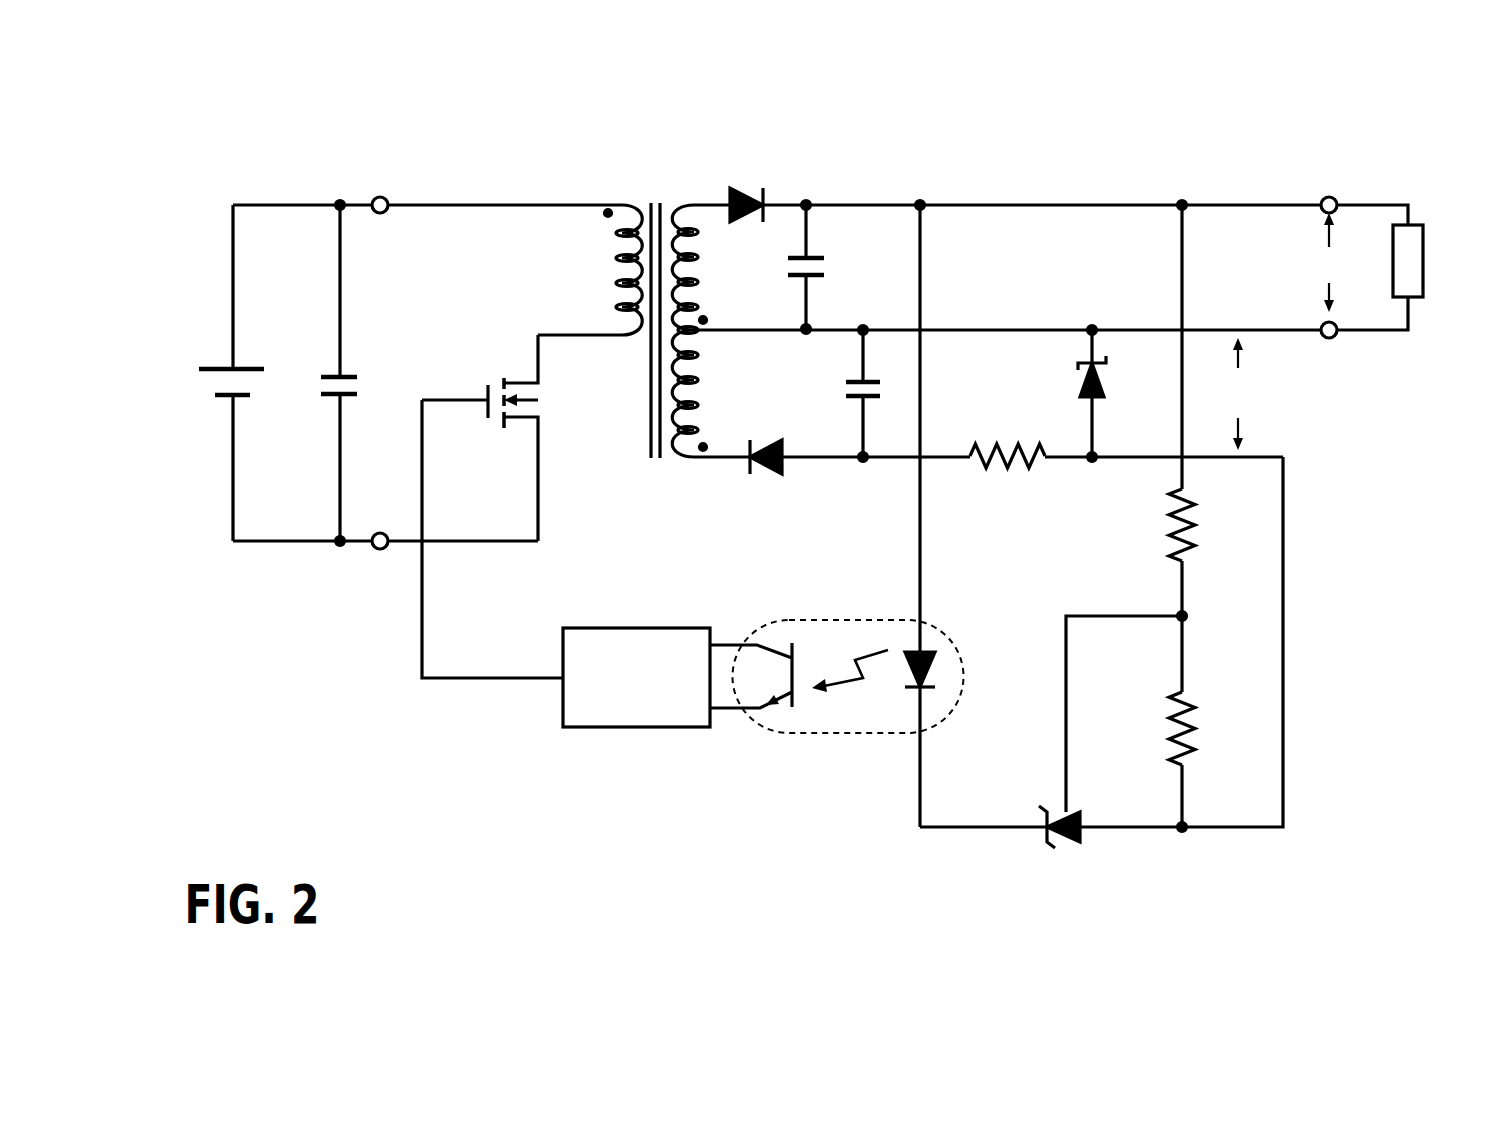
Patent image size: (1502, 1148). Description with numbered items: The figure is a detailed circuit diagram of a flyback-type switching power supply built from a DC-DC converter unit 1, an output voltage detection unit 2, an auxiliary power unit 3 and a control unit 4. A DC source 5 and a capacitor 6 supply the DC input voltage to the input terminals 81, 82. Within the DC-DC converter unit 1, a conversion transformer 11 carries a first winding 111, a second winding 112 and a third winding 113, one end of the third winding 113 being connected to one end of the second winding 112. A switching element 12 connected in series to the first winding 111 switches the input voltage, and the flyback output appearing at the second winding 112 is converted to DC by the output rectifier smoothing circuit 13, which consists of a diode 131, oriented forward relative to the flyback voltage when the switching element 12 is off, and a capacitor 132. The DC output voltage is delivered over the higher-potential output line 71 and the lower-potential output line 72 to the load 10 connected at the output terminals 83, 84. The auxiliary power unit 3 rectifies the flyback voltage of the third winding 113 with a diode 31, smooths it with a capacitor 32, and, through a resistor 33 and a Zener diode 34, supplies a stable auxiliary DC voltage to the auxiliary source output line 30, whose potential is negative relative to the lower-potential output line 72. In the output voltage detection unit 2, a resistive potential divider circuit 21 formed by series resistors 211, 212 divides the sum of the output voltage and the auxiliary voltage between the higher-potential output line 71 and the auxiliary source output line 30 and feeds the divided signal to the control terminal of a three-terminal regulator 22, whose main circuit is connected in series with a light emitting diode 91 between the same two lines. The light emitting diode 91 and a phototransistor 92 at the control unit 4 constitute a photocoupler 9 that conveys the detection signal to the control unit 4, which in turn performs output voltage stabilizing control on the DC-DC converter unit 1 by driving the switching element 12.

The DC-DC converter unit 1 is at (642, 550).
The output voltage detection unit 2 is at (983, 765).
The auxiliary power unit 3 is at (940, 393).
The control unit 4 is at (612, 730).
The DC source 5 is at (203, 383).
The capacitor 6 is at (357, 385).
The photocoupler 9 is at (818, 735).
The load 10 is at (1423, 260).
The conversion transformer 11 is at (640, 175).
The switching element 12 is at (496, 381).
The output rectifier smoothing circuit 13 is at (866, 183).
The resistive potential divider circuit 21 is at (1258, 573).
The 3-terminal regulator 22 is at (1076, 856).
The auxiliary source output line 30 is at (1285, 673).
The diode 31 is at (771, 477).
The capacitor 32 is at (850, 388).
The resistor 33 is at (982, 468).
The Zener diode 34 is at (1106, 378).
The higher-potential output line 71 is at (1045, 203).
The lower-potential output line 72 is at (1028, 327).
The input terminal 81 is at (380, 197).
The input terminal 82 is at (380, 549).
The output terminal 83 is at (1329, 196).
The output terminal 84 is at (1329, 339).
The light emitting diode 91 is at (942, 660).
The phototransistor 92 is at (772, 672).
The first winding 111 is at (612, 283).
The second winding 112 is at (700, 258).
The third winding 113 is at (700, 355).
The diode 131 is at (745, 187).
The capacitor 132 is at (826, 268).
The resistor 211 is at (1165, 521).
The resistor 212 is at (1171, 730).